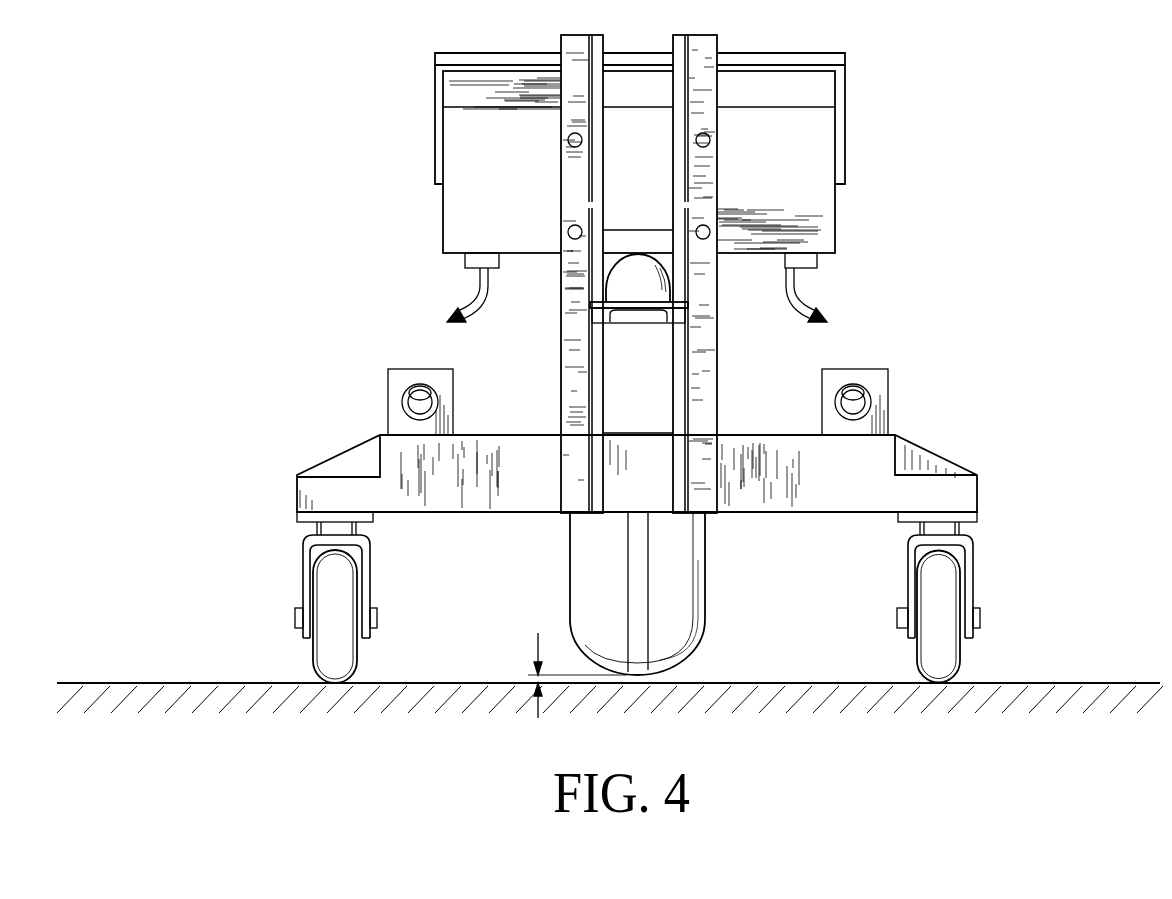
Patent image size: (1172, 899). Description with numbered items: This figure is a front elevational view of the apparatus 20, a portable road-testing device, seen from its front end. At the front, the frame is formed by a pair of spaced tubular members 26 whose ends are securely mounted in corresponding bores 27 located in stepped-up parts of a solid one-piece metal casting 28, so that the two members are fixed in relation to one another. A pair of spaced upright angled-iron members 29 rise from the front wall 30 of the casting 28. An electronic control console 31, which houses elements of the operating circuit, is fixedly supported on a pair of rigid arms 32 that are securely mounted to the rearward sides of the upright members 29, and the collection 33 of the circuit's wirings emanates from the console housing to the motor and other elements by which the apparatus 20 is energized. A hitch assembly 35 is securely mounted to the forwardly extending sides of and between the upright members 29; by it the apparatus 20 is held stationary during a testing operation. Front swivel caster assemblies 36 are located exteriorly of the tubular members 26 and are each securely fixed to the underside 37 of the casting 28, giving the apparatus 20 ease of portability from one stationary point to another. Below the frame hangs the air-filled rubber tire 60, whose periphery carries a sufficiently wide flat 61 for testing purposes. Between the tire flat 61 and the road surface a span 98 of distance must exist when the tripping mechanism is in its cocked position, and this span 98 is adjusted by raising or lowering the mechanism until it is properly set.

The apparatus 20 is at (325, 150).
The tubular members 26 is at (403, 405).
The bores 27 is at (409, 392).
The solid one-piece metal casting 28 is at (737, 433).
The upright angled-iron members 29 is at (560, 345).
The front wall 30 is at (538, 483).
The electronic control console 31 is at (835, 215).
The rigid arms 32 is at (568, 140).
The collection of wirings 33 is at (468, 293).
The hitch assembly 35 is at (628, 323).
The front swivel caster assemblies 36 is at (303, 582).
The underside 37 is at (808, 514).
The air-filled rubber tire 60 is at (707, 595).
The flat 61 is at (625, 583).
The span 98 is at (528, 680).